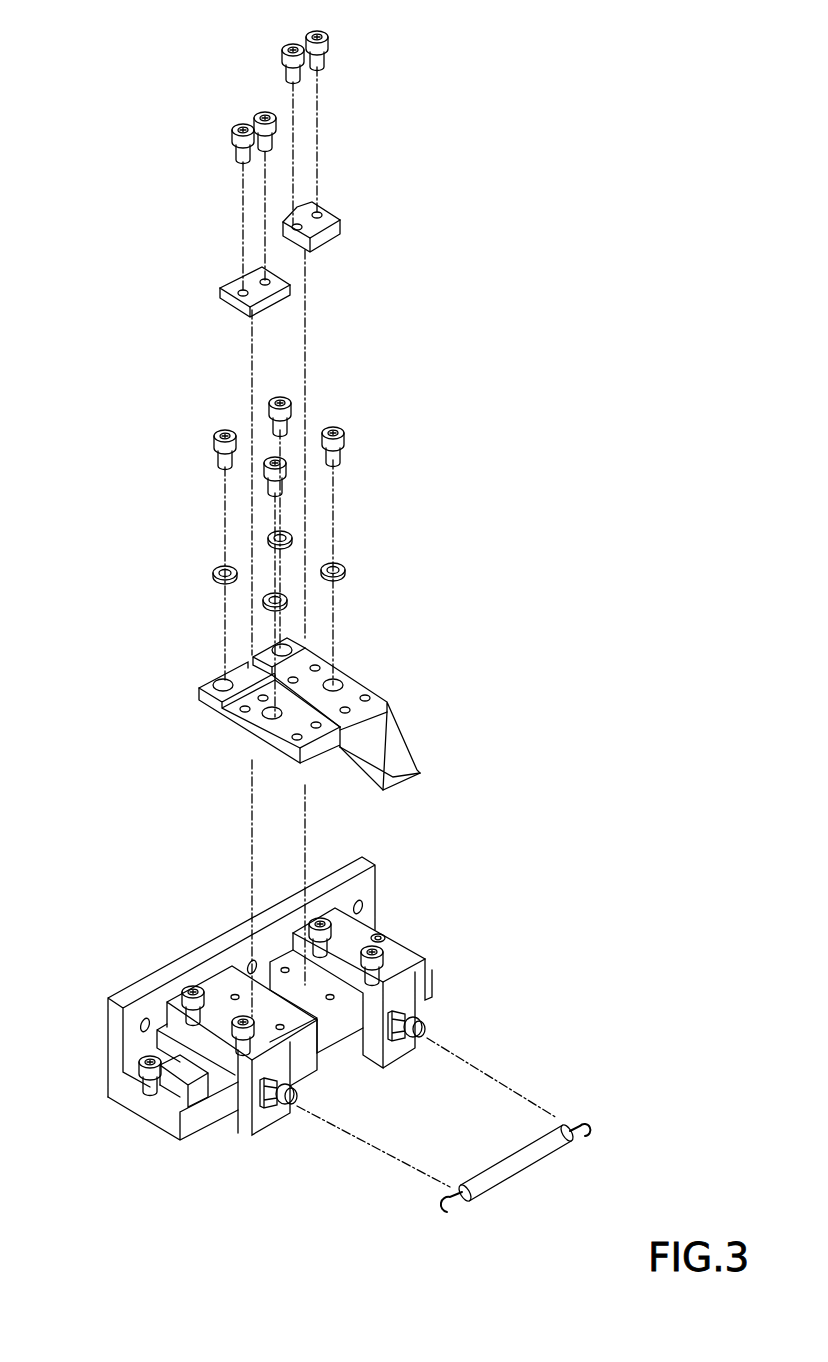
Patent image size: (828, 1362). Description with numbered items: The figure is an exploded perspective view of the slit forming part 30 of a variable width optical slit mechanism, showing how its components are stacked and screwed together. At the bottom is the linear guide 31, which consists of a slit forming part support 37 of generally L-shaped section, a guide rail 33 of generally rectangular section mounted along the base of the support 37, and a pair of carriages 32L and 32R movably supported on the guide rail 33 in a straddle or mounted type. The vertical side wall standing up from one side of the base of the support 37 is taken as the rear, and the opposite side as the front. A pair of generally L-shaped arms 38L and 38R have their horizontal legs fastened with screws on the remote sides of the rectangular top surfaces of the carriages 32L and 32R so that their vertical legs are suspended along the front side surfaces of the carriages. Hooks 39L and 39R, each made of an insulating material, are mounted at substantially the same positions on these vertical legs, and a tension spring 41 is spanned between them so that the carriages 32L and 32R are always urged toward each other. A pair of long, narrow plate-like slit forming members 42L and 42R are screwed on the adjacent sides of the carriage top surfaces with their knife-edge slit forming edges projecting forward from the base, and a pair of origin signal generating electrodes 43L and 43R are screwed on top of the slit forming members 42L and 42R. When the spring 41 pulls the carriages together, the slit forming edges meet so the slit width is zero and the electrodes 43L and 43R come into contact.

The slit forming part 30 is at (107, 555).
The linear guide 31 is at (409, 928).
The carriage 32L is at (237, 983).
The carriage 32R is at (273, 970).
The guide rail 33 is at (175, 1087).
The slit forming part support 37 is at (167, 1118).
The arm 38L is at (257, 1060).
The arm 38R is at (400, 985).
The hook 39L is at (297, 1108).
The hook 39R is at (428, 1024).
The tension spring 41 is at (527, 1168).
The slit forming member 42L is at (300, 767).
The slit forming member 42R is at (387, 735).
The origin signal generating electrode 43L is at (235, 283).
The origin signal generating electrode 43R is at (327, 217).